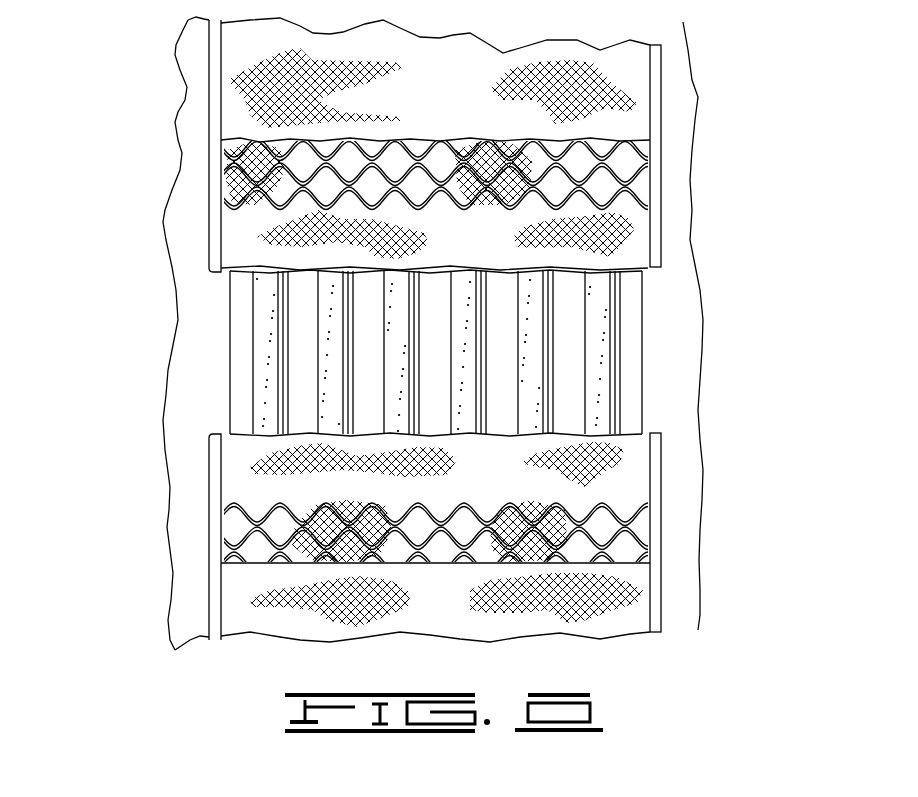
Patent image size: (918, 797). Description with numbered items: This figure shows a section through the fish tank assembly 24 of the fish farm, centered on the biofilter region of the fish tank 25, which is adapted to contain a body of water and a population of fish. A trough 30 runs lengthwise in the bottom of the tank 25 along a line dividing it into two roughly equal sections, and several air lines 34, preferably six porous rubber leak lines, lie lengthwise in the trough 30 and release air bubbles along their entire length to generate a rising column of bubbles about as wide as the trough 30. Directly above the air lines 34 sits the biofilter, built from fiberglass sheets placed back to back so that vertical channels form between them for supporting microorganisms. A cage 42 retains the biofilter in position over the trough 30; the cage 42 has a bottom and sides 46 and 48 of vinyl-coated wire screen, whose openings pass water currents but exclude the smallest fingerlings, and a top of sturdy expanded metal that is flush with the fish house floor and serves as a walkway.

The fish tank assembly 24 is at (700, 95).
The fish tank 25 is at (680, 395).
The trough 30 is at (238, 378).
The air lines 34 is at (597, 370).
The cage 42 is at (667, 127).
The side 46 is at (213, 178).
The side 48 is at (655, 247).